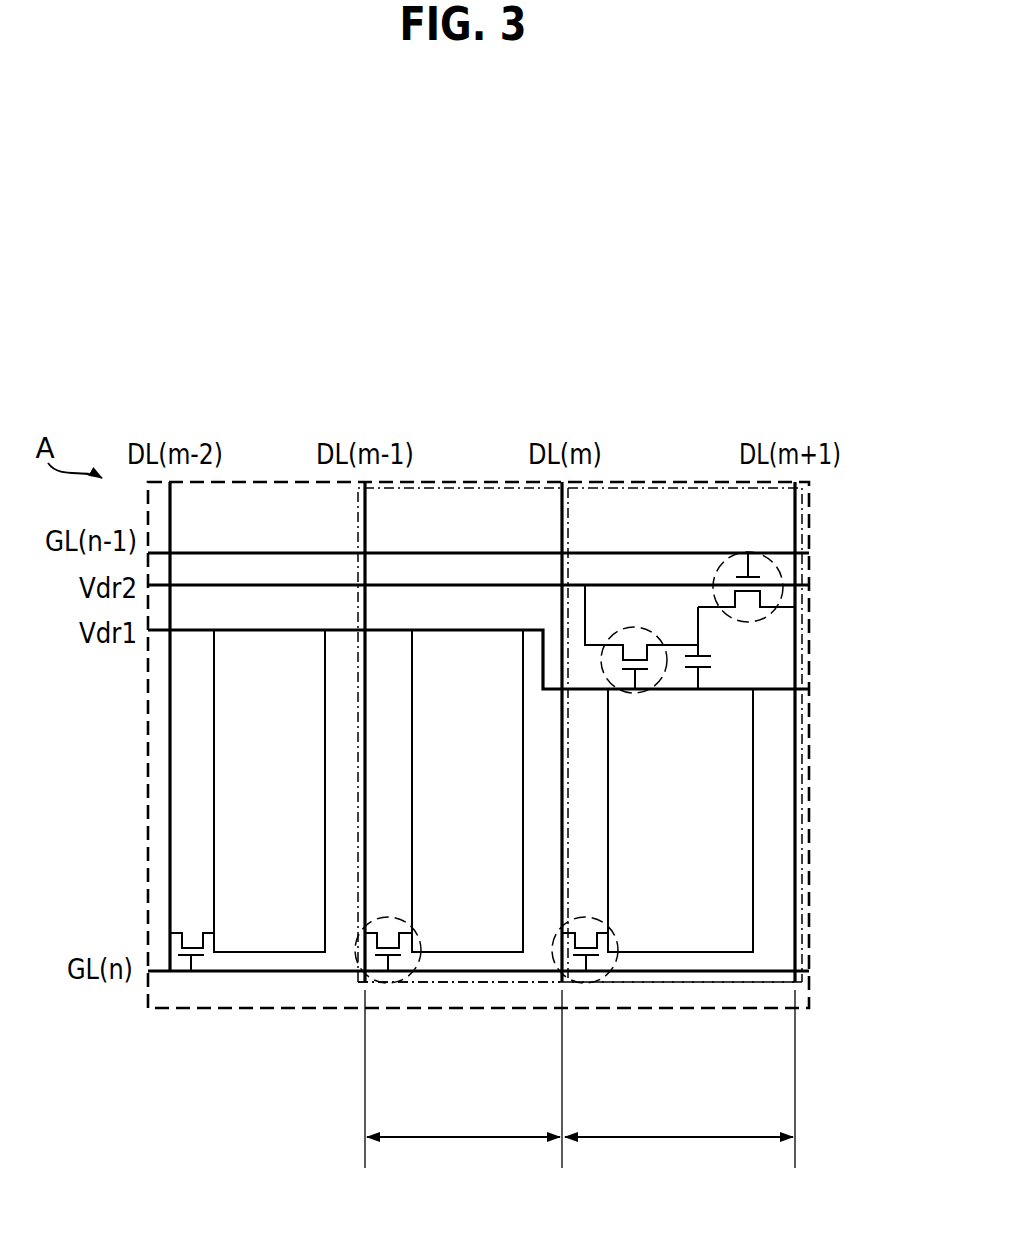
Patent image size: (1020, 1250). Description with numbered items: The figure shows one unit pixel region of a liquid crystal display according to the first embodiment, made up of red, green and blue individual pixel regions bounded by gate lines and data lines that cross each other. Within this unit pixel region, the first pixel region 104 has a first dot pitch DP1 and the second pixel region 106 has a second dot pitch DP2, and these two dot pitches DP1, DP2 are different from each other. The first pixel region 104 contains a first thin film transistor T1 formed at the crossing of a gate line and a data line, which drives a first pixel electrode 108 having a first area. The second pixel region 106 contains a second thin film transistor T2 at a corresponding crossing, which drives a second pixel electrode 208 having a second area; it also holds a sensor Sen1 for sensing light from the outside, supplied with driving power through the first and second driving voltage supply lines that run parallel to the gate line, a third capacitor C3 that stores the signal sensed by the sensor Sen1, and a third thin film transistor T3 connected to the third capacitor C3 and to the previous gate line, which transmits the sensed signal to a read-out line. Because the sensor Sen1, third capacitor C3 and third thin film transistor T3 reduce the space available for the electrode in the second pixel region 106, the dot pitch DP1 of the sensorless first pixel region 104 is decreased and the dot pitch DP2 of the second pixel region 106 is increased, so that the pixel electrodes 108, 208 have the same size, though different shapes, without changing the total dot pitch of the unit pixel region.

The first pixel region 104 is at (522, 995).
The second pixel region 106 is at (724, 995).
The first pixel electrode 108 is at (437, 940).
The second pixel electrode 208 is at (737, 808).
The first thin film transistor T1 is at (388, 990).
The second thin film transistor T2 is at (583, 990).
The third thin film transistor T3 is at (800, 568).
The sensor Sen1 is at (678, 630).
The third capacitor C3 is at (732, 667).
The first dot pitch DP1 is at (463, 1154).
The second dot pitch DP2 is at (679, 1154).